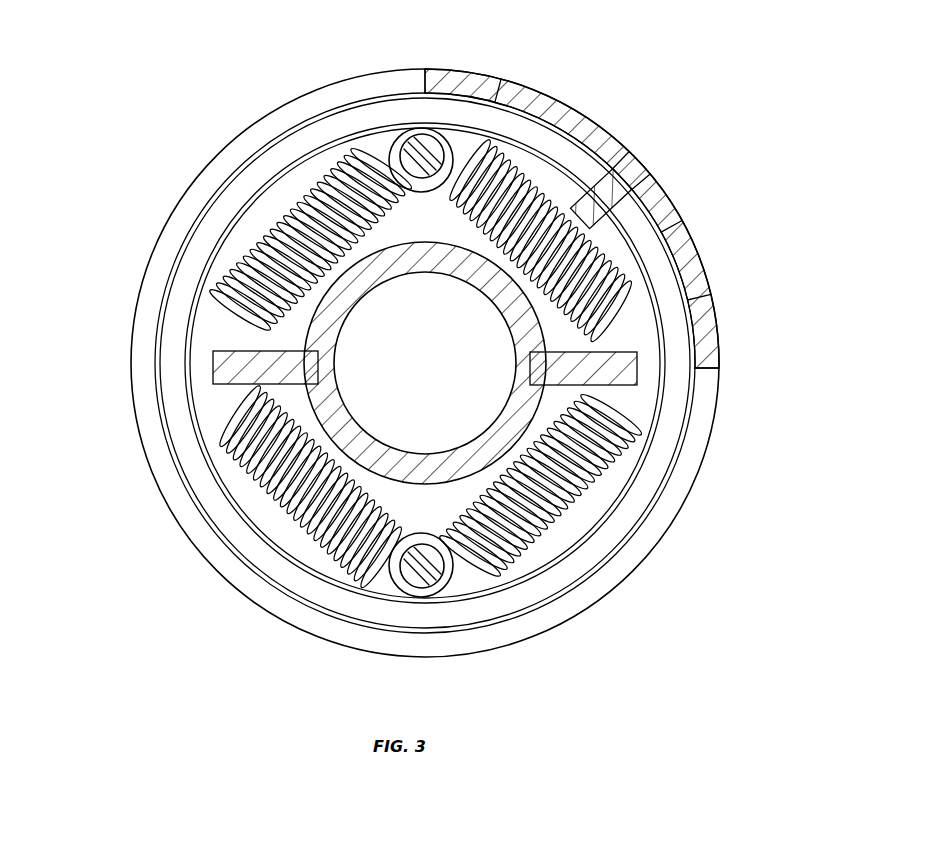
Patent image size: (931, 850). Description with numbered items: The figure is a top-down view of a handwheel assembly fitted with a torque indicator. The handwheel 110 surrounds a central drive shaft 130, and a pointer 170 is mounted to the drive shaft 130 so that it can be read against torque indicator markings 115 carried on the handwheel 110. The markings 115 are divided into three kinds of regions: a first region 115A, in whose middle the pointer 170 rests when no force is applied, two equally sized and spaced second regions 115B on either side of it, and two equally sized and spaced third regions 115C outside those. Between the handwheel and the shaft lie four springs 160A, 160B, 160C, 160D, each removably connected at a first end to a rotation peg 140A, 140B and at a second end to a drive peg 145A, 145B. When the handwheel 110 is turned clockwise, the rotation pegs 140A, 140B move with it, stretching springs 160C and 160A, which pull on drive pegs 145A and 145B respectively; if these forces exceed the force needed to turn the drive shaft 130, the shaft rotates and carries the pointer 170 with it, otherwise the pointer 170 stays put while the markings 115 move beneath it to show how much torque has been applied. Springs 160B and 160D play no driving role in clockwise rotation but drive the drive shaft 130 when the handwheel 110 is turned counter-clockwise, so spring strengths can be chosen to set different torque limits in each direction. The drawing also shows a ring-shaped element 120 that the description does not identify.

The handwheel 110 is at (142, 384).
The torque indicator markings 115 is at (738, 220).
The first region 115A is at (655, 200).
The second region 115B is at (543, 100).
The third region 115C is at (468, 76).
The inner housing ring 120 is at (597, 482).
The drive shaft 130 is at (233, 330).
The rotation peg 140A is at (213, 367).
The rotation peg 140B is at (640, 373).
The drive peg 145A is at (420, 578).
The drive peg 145B is at (412, 150).
The spring 160A is at (607, 302).
The spring 160B is at (550, 548).
The spring 160C is at (292, 522).
The spring 160D is at (262, 238).
The pointer 170 is at (640, 163).